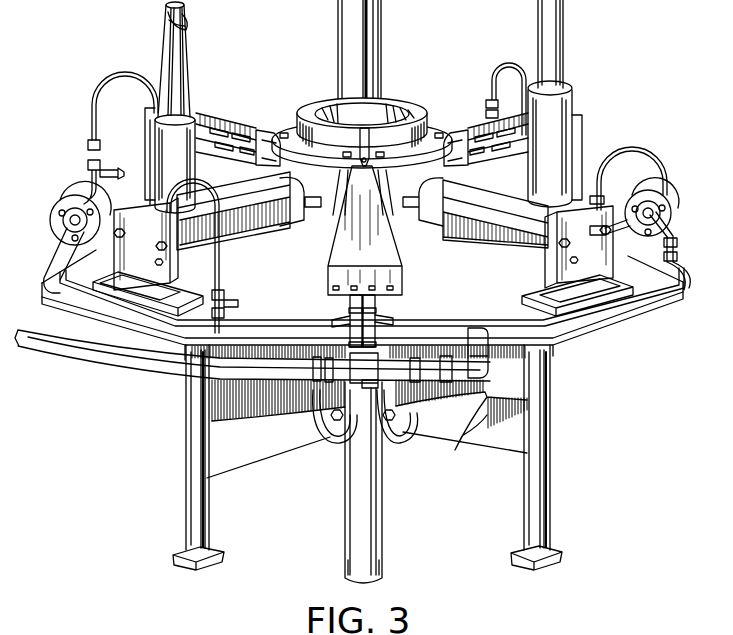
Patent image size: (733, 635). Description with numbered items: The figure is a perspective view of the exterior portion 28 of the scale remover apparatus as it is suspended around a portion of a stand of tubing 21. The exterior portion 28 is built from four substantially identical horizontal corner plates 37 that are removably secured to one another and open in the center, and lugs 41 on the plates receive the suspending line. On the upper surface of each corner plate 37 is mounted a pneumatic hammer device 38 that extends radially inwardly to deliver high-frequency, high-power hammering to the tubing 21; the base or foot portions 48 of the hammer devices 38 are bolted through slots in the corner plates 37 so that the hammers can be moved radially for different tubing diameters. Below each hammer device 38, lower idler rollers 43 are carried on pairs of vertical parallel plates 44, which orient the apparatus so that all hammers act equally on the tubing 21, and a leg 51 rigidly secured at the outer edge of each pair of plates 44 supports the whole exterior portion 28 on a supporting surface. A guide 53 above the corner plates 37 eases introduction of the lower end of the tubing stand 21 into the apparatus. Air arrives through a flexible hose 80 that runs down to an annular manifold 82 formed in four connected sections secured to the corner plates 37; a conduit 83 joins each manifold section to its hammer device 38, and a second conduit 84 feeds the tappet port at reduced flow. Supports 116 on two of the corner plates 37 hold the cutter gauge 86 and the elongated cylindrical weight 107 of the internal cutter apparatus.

The tubing 21 is at (387, 515).
The exterior portion of the scale remover apparatus 28 is at (658, 83).
The horizontal corner plates 37 is at (80, 254).
The pneumatic hammer device 38 is at (236, 121).
The lugs 41 is at (360, 257).
The lower idler rollers 43 is at (331, 446).
The vertical parallel plates 44 is at (276, 450).
The base or foot portions 48 is at (171, 268).
The leg 51 is at (212, 523).
The guide 53 is at (405, 100).
The flexible hose 80 is at (94, 360).
The annular manifold 82 is at (86, 305).
The conduit 83 is at (664, 158).
The second conduit 84 is at (345, 335).
The cutter gauge 86 is at (190, 52).
The elongated cylindrical weight 107 is at (562, 10).
The supports 116 is at (160, 136).